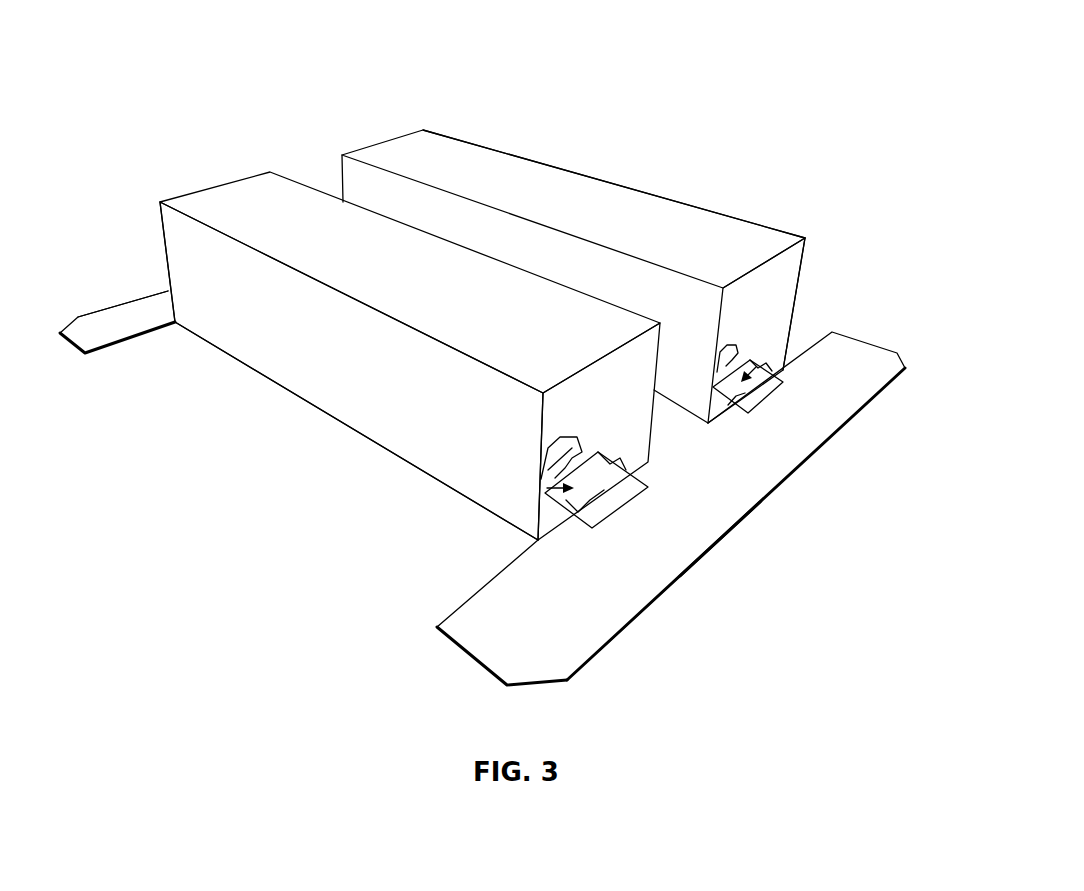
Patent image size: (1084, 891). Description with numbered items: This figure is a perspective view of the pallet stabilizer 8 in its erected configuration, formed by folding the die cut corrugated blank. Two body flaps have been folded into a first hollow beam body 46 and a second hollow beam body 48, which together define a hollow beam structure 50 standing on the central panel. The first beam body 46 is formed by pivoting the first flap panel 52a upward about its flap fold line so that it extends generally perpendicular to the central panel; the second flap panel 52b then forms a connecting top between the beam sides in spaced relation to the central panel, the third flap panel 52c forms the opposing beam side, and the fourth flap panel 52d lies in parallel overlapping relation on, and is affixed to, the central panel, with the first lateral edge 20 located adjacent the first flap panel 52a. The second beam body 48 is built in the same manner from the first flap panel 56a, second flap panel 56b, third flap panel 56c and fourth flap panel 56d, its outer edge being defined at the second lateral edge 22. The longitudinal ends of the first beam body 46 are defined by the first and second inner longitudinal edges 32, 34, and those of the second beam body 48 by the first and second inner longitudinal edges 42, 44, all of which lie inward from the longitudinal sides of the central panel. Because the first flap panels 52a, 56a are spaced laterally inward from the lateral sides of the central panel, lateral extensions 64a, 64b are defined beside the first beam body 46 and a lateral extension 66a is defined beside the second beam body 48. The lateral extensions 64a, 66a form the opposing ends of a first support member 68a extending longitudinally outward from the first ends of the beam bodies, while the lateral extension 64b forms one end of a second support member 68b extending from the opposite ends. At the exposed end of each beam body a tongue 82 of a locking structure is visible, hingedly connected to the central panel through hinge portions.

The pallet stabilizer 8 is at (800, 80).
The first lateral edge 20 is at (540, 543).
The second lateral edge 22 is at (767, 360).
The first inner longitudinal edge 32 is at (658, 432).
The second inner longitudinal edge 34 is at (158, 233).
The first inner longitudinal edge 42 is at (807, 243).
The second inner longitudinal edge 44 is at (405, 135).
The first hollow beam body 46 is at (294, 383).
The second hollow beam body 48 is at (637, 190).
The hollow beam structure 50 is at (293, 161).
The first flap panel 52a is at (418, 445).
The second flap panel 52b is at (420, 281).
The third flap panel 52c is at (632, 375).
The fourth flap panel 52d is at (592, 435).
The first flap panel 56a is at (787, 273).
The second flap panel 56b is at (567, 205).
The third flap panel 56c is at (353, 183).
The fourth flap panel 56d is at (735, 347).
The lateral extension 64a is at (547, 657).
The lateral extension 64b is at (112, 317).
The lateral extension 66a is at (872, 375).
The first support member 68a is at (705, 496).
The second support member 68b is at (166, 291).
The tongue 82 is at (545, 493).